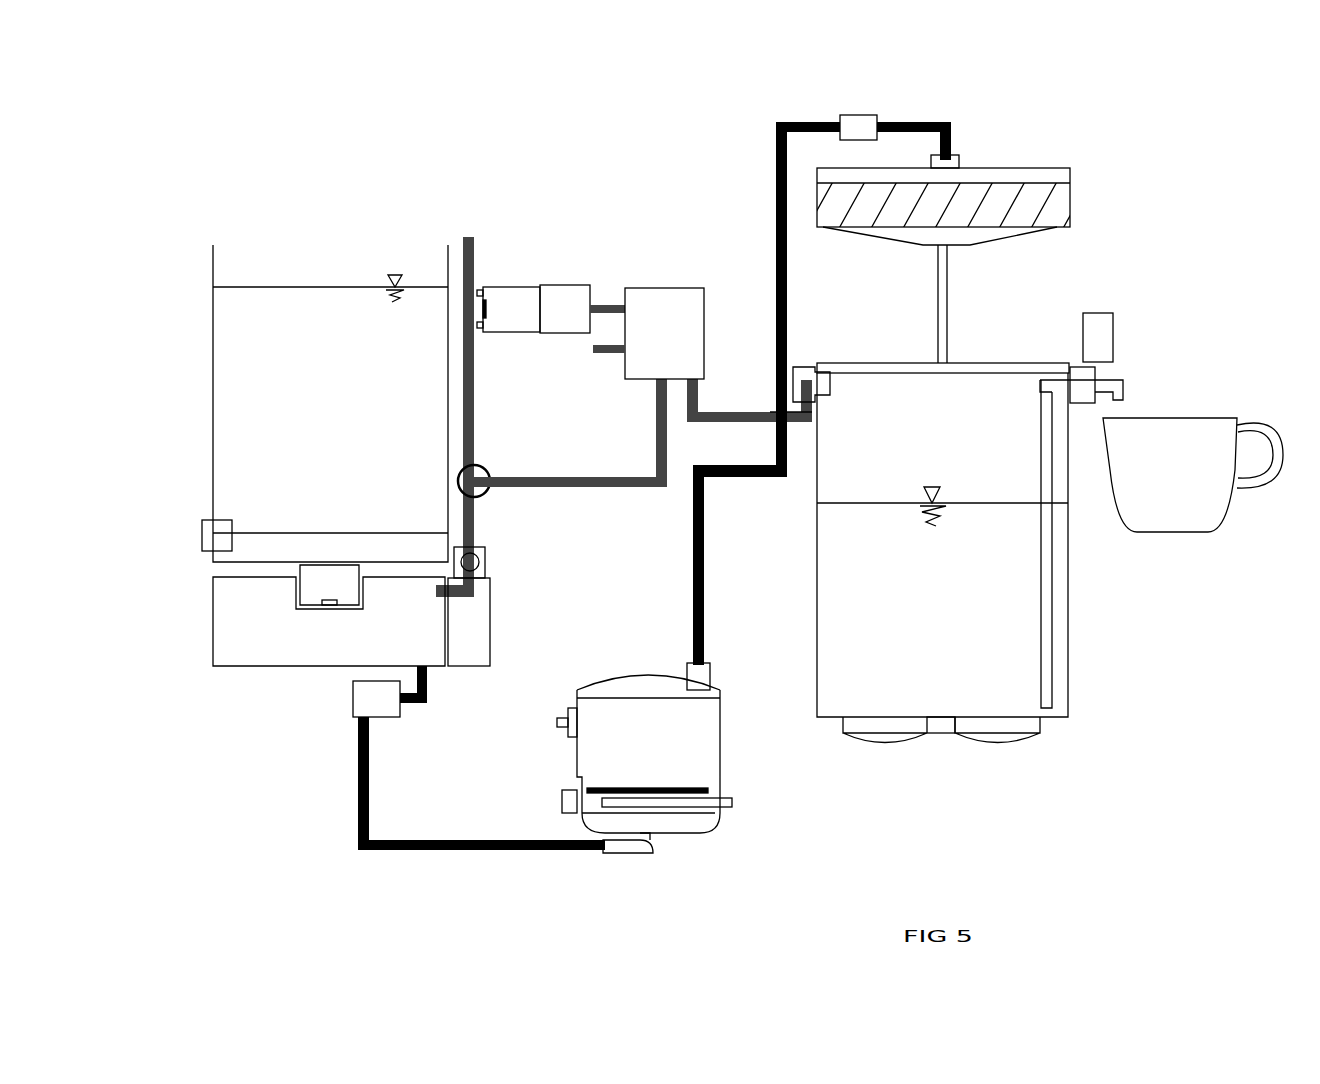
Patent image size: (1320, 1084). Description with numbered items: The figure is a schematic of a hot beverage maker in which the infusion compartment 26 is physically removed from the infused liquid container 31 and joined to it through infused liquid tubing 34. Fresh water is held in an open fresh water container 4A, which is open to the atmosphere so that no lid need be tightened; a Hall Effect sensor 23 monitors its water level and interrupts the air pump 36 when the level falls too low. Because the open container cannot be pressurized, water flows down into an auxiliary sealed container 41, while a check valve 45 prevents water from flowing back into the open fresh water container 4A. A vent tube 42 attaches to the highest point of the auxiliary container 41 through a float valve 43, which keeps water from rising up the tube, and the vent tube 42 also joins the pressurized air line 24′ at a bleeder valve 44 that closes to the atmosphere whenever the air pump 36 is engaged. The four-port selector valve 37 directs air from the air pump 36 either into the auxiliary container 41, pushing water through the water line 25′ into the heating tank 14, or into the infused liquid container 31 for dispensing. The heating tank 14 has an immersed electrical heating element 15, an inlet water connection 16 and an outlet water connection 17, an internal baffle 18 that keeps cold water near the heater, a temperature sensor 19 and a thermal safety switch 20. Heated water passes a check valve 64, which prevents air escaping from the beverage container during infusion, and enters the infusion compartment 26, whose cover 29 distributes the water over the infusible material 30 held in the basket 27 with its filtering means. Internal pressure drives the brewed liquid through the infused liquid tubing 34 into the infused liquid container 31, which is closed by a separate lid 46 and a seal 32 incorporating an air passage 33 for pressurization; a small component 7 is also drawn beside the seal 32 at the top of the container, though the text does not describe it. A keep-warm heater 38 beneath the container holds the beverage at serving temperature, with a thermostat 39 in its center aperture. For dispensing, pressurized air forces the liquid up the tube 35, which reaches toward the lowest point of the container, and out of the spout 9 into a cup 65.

The open fresh water container 4A is at (334, 252).
The Hall Effect sensor 23 is at (208, 538).
The vent tube 42 is at (474, 250).
The bleeder valve 44 is at (486, 470).
The air line 24′ is at (604, 482).
The air pump 36 is at (556, 298).
The selector valve 37 is at (652, 303).
The float valve 43 is at (482, 561).
The auxiliary sealed container 41 is at (259, 630).
The check valve 45 is at (368, 700).
The water line 25′ is at (360, 775).
The infusion compartment 26 is at (872, 203).
The check valve 64 is at (857, 128).
The cover 29 is at (986, 170).
The infusible material 30 is at (998, 200).
The basket 27 is at (818, 207).
The infused liquid tubing 34 is at (950, 278).
The lid 46 is at (1028, 360).
The air passage 33 is at (806, 370).
The seal 32 is at (800, 365).
The sensor 7 is at (1100, 340).
The spout 9 is at (1118, 385).
The infused liquid container 31 is at (1003, 613).
The tube 35 is at (1050, 679).
The thermostat 39 is at (938, 737).
The keep-warm heater 38 is at (1015, 738).
The cup 65 is at (1202, 455).
The heating tank 14 is at (642, 742).
The outlet water connection 17 is at (700, 672).
The temperature sensor 19 is at (557, 722).
The thermal safety switch 20 is at (570, 800).
The internal baffle 18 is at (700, 789).
The electrical heating element 15 is at (712, 805).
The inlet water connection 16 is at (625, 850).